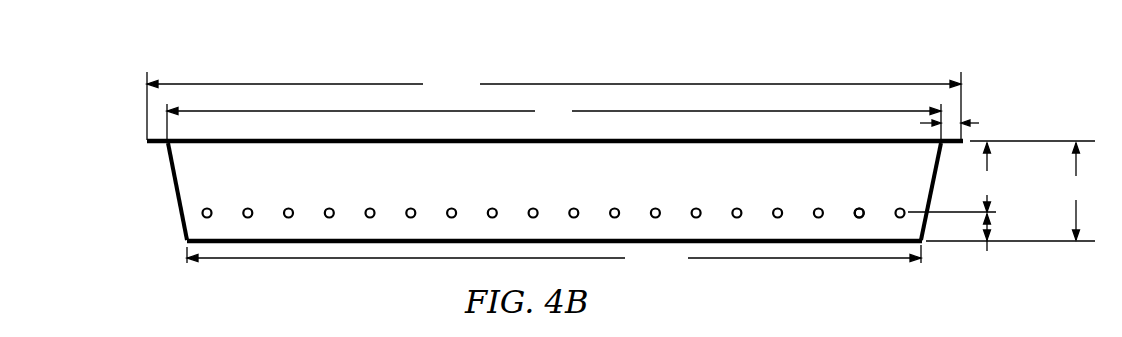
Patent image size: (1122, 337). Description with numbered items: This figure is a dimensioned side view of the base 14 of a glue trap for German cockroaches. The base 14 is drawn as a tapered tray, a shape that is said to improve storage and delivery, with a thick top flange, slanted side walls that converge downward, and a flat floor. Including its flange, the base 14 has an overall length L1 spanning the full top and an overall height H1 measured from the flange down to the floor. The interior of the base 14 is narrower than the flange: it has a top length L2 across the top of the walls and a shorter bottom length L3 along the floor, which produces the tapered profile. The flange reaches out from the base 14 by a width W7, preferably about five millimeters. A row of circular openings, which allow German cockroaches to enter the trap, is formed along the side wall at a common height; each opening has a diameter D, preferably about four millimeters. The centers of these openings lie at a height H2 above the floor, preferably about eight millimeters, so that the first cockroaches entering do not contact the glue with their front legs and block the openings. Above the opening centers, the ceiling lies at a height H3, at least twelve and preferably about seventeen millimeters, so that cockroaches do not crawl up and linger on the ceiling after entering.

The base 14 is at (297, 70).
The overall length L1 is at (554, 106).
The top length L2 is at (554, 122).
The bottom length L3 is at (554, 257).
The flange width W7 is at (965, 125).
The overall height H1 is at (1010, 191).
The opening center height H2 is at (986, 246).
The ceiling height above openings H3 is at (953, 177).
The opening diameter D is at (849, 227).